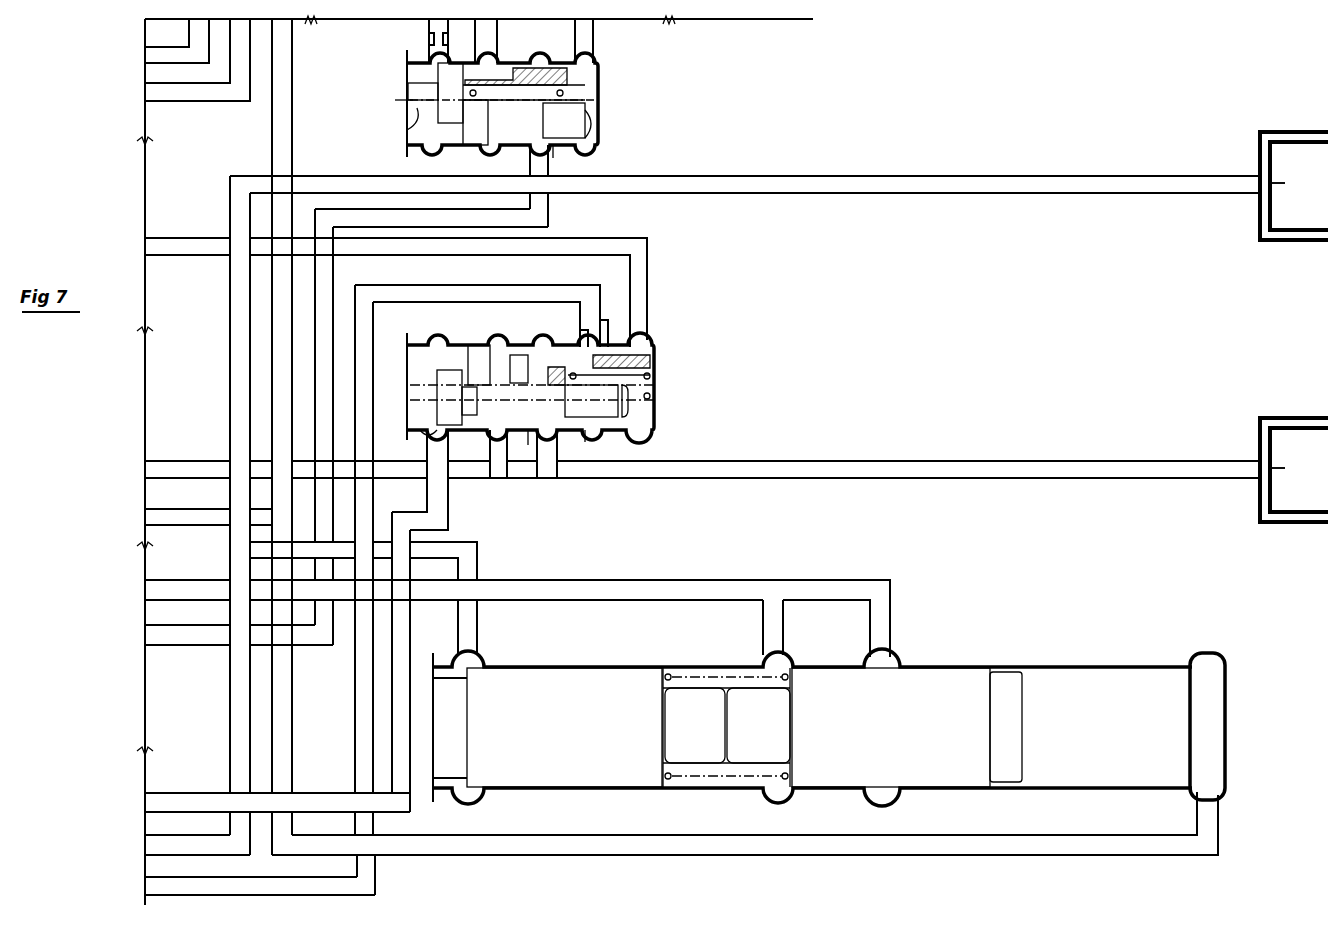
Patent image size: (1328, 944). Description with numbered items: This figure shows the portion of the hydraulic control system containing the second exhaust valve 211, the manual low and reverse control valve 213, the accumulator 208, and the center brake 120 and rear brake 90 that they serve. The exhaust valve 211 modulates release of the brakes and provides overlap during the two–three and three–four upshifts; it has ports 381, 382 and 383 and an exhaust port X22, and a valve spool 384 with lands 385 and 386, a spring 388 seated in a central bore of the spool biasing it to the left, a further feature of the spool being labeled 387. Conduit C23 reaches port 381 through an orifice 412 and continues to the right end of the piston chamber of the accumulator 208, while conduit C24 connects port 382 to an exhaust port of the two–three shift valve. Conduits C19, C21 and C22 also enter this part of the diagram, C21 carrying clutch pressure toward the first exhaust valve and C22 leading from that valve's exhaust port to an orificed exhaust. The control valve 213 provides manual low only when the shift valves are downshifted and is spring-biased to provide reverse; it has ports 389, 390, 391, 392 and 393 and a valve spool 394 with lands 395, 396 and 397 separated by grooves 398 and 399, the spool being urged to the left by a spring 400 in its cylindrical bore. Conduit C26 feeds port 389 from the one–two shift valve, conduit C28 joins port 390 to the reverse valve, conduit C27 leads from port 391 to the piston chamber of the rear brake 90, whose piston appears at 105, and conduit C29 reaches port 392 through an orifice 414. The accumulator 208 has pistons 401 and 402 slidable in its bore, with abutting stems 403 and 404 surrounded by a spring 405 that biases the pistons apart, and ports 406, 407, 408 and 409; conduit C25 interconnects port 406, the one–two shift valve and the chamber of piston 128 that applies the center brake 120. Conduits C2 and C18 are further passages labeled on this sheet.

The exhaust valve 211 is at (603, 72).
The orifice 412 is at (426, 42).
The exhaust port X22 is at (509, 38).
The conduit C19 is at (595, 38).
The port 381 is at (432, 62).
The valve spool 384 is at (394, 100).
The spring 388 is at (600, 86).
The land 386 is at (600, 110).
The port 383 is at (600, 134).
The exhaust valve land 387 is at (500, 132).
The land 385 is at (475, 142).
The port 382 is at (555, 152).
The manual low and reverse control valve 213 is at (660, 362).
The orifice 414 is at (606, 316).
The valve spool 394 is at (402, 377).
The land 395 is at (479, 350).
The groove 398 is at (504, 350).
The groove 399 is at (571, 352).
The land 396 is at (562, 352).
The spring 400 is at (655, 377).
The port 393 is at (652, 424).
The port 389 is at (422, 439).
The port 390 is at (466, 423).
The land 397 is at (575, 420).
The port 392 is at (600, 432).
The port 391 is at (536, 447).
The accumulator 208 is at (1087, 658).
The piston 401 is at (563, 668).
The piston 402 is at (944, 670).
The stem 403 is at (688, 755).
The stem 404 is at (748, 755).
The spring 405 is at (672, 672).
The port 406 is at (480, 658).
The port 407 is at (780, 658).
The port 408 is at (886, 655).
The port 409 is at (1208, 798).
The brake 120 is at (1282, 149).
The piston 128 is at (1275, 210).
The brake 90 is at (1287, 434).
The rear brake piston 105 is at (1277, 490).
The conduit C2 is at (169, 238).
The conduit C18 is at (585, 583).
The conduit C21 is at (183, 30).
The conduit C22 is at (218, 98).
The conduit C23 is at (292, 150).
The conduit C24 is at (548, 214).
The conduit C25 is at (335, 178).
The conduit C26 is at (448, 518).
The conduit C27 is at (612, 480).
The conduit C28 is at (170, 470).
The conduit C29 is at (358, 688).